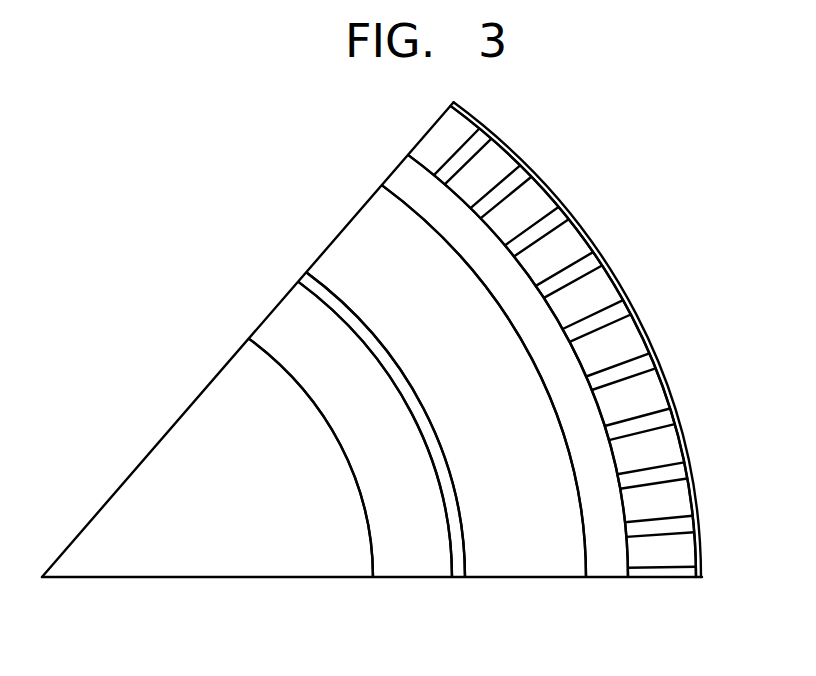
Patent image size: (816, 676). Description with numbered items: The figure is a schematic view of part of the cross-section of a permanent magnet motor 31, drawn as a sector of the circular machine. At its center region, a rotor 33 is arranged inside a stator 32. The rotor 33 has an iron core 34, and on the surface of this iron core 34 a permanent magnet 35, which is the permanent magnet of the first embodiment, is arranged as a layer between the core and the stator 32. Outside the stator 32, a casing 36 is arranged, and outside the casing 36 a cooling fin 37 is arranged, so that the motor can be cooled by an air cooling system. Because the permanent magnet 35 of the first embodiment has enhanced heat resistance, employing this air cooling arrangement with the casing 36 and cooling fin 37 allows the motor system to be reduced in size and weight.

The permanent magnet motor 31 is at (150, 181).
The stator 32 is at (433, 370).
The rotor 33 is at (273, 420).
The iron core 34 is at (235, 395).
The permanent magnet 35 is at (292, 323).
The casing 36 is at (598, 557).
The cooling fin 37 is at (665, 493).